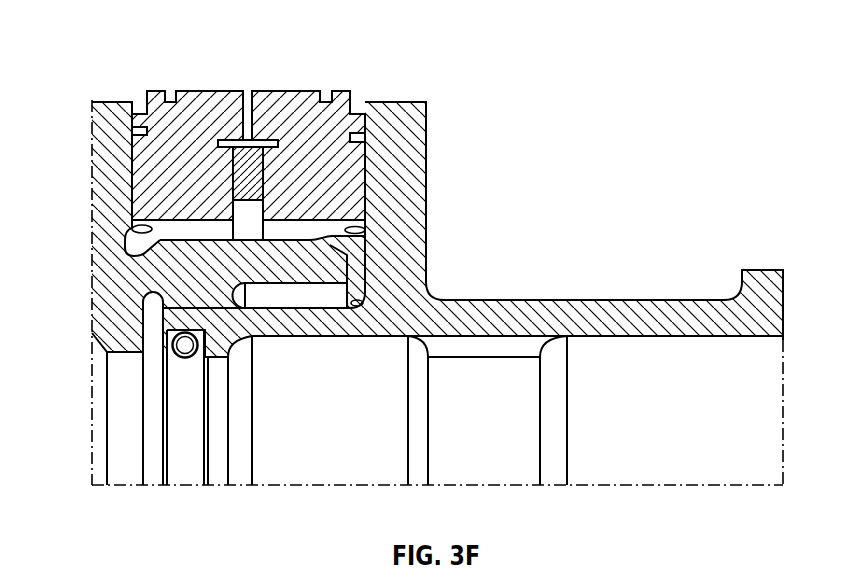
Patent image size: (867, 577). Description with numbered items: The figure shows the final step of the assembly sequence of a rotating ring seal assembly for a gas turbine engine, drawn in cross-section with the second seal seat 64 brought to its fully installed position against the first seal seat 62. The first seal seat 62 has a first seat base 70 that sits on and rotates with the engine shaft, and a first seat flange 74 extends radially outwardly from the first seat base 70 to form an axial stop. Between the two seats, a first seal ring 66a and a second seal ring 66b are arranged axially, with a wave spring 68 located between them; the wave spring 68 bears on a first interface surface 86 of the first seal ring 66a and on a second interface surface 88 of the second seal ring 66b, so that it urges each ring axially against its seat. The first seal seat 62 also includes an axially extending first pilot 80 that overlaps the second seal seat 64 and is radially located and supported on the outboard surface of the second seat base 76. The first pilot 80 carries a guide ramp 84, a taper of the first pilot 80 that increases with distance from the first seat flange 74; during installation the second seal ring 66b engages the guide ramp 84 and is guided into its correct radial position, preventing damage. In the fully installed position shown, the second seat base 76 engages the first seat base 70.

The first seal seat 62 is at (112, 242).
The second seal seat 64 is at (408, 208).
The first seal ring 66a is at (163, 184).
The second seal ring 66b is at (336, 186).
The wave spring 68 is at (262, 184).
The first seat base 70 is at (92, 300).
The first seat flange 74 is at (92, 152).
The second seat base 76 is at (182, 323).
The first pilot 80 is at (256, 325).
The guide ramp 84 is at (340, 235).
The first interface surface 86 is at (232, 162).
The second interface surface 88 is at (268, 172).